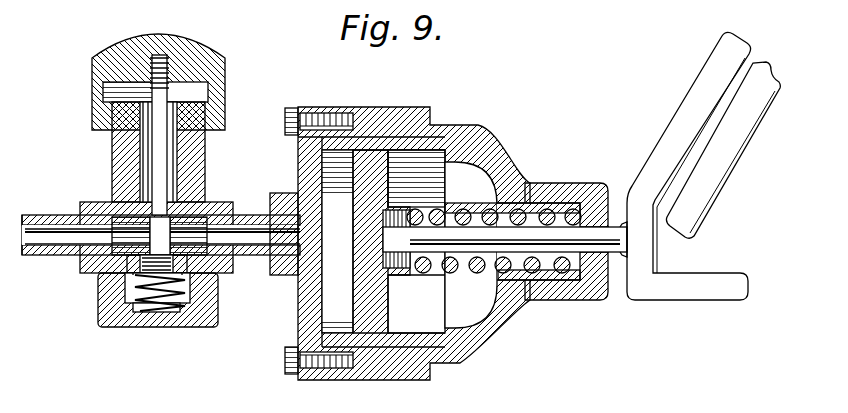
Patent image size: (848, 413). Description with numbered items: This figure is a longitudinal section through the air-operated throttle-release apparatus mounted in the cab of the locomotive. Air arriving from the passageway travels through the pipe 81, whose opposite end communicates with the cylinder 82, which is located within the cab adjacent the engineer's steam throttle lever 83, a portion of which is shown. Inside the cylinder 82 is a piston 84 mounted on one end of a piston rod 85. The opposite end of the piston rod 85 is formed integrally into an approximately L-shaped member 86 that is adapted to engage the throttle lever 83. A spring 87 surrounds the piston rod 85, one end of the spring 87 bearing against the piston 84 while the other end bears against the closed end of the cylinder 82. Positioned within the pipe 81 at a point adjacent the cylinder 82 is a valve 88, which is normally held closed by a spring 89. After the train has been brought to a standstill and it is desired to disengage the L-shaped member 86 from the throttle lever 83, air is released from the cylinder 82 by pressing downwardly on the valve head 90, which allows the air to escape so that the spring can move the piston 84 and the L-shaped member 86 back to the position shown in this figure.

The pipe 81 is at (30, 216).
The cylinder 82 is at (393, 108).
The steam throttle lever 83 is at (722, 188).
The piston 84 is at (390, 302).
The piston rod 85 is at (492, 253).
The L-shaped member 86 is at (692, 274).
The spring 87 is at (548, 201).
The valve 88 is at (116, 204).
The spring 89 is at (152, 313).
The valve head 90 is at (186, 40).